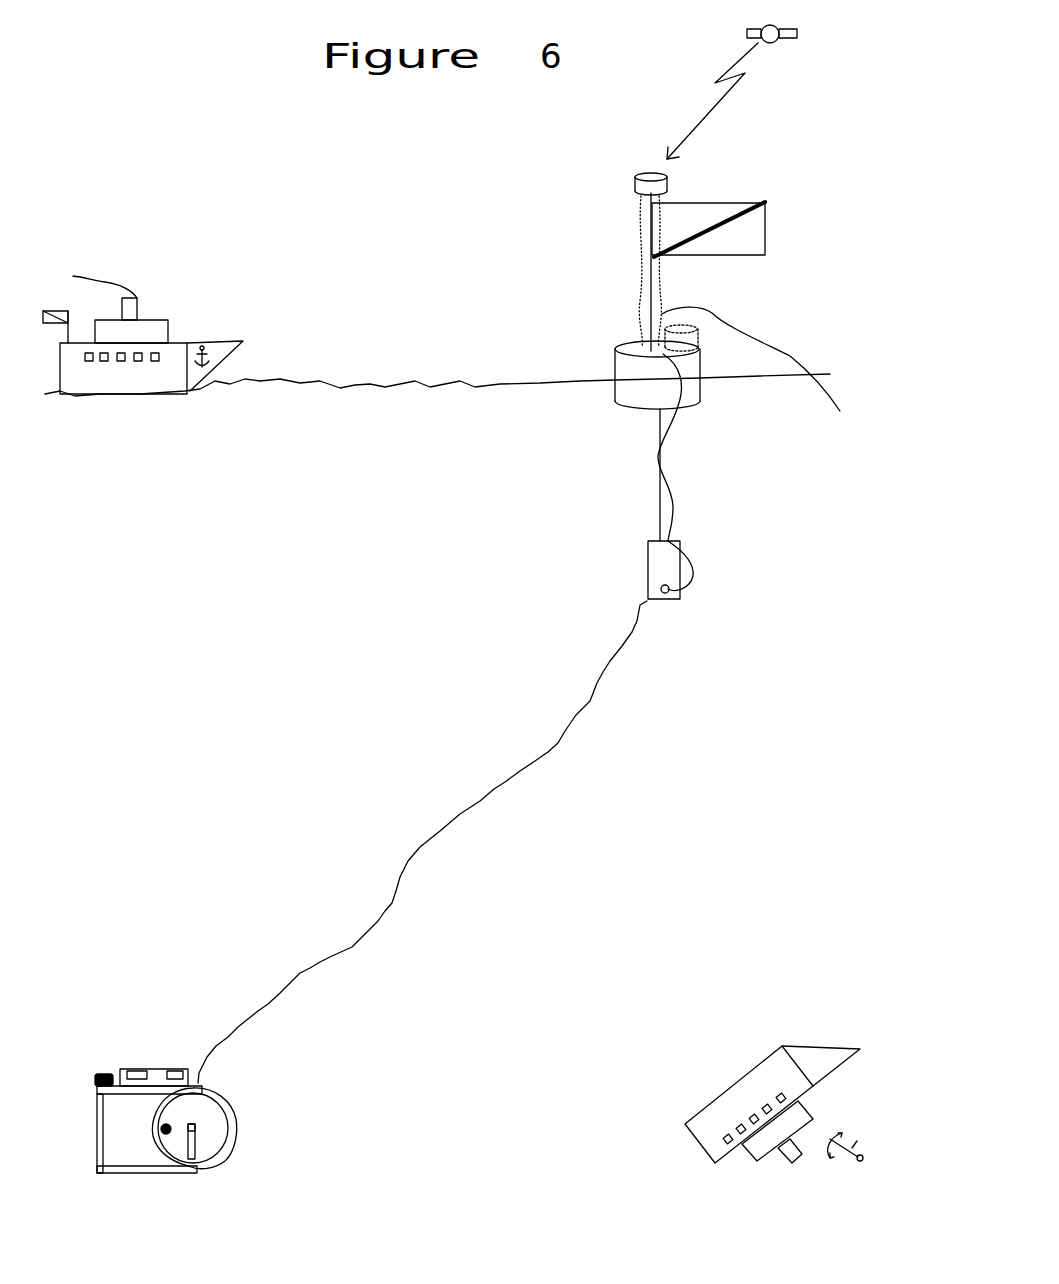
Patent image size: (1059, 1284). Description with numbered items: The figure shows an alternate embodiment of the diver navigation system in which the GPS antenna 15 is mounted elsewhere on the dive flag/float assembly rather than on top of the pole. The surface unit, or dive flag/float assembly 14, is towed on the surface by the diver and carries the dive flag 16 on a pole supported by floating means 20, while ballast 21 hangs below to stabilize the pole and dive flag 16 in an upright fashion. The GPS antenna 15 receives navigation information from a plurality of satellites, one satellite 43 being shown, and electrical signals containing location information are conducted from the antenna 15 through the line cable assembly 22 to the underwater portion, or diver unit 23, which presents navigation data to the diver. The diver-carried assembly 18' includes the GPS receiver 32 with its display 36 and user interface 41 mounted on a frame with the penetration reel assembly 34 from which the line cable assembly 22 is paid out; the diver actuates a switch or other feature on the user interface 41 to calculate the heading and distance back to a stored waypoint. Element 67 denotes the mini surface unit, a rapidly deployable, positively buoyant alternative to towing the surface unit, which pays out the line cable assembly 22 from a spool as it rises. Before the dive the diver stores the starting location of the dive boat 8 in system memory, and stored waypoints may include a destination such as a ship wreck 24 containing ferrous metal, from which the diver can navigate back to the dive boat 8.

The dive boat 8 is at (153, 323).
The dive flag/float assembly 14 is at (592, 287).
The GPS antenna 15 is at (667, 178).
The dive flag 16 is at (737, 247).
The Floating means 20 is at (633, 397).
The ballast 21 is at (658, 563).
The line cable assembly 22 is at (617, 658).
The diver unit 23 is at (325, 1047).
The Ship Wreck containing Ferrous metal 24 is at (803, 1062).
The GPS Receiver 32 is at (236, 935).
The Display 36 is at (236, 935).
The user interface 41 is at (157, 1075).
The penetration reel assembly 34 is at (210, 1119).
The satellite 43 is at (755, 89).
The mini surface unit 67 is at (100, 1073).
The Diver portion of navigation system 18' is at (260, 978).